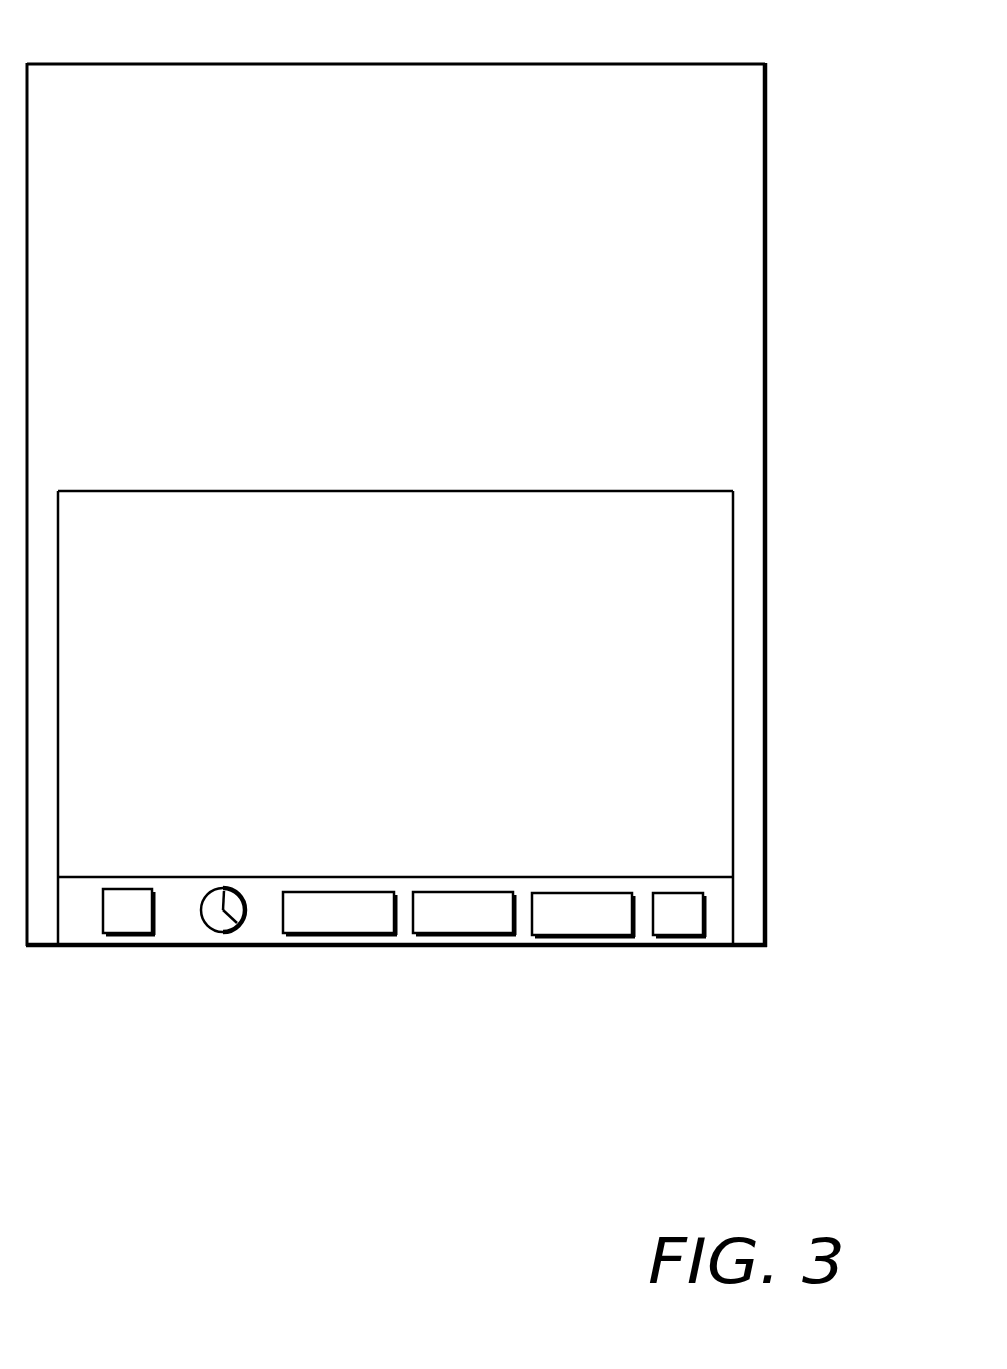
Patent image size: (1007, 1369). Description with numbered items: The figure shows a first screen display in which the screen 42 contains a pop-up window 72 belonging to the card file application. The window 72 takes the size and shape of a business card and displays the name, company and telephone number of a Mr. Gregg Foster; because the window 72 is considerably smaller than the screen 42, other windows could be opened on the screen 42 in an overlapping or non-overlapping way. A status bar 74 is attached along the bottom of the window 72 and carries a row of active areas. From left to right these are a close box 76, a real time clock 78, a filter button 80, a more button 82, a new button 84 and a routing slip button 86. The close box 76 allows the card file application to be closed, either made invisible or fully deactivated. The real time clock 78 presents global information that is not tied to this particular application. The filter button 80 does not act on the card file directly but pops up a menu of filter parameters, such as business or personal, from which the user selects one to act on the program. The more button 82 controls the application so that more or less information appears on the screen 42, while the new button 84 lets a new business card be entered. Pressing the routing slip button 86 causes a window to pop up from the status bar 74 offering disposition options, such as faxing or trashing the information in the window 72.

The screen 42 is at (765, 205).
The window 72 is at (642, 539).
The status bar 74 is at (706, 872).
The close box 76 is at (126, 915).
The real time clock 78 is at (213, 928).
The filter button 80 is at (348, 928).
The more button 82 is at (462, 928).
The new button 84 is at (585, 925).
The routing slip button 86 is at (683, 928).